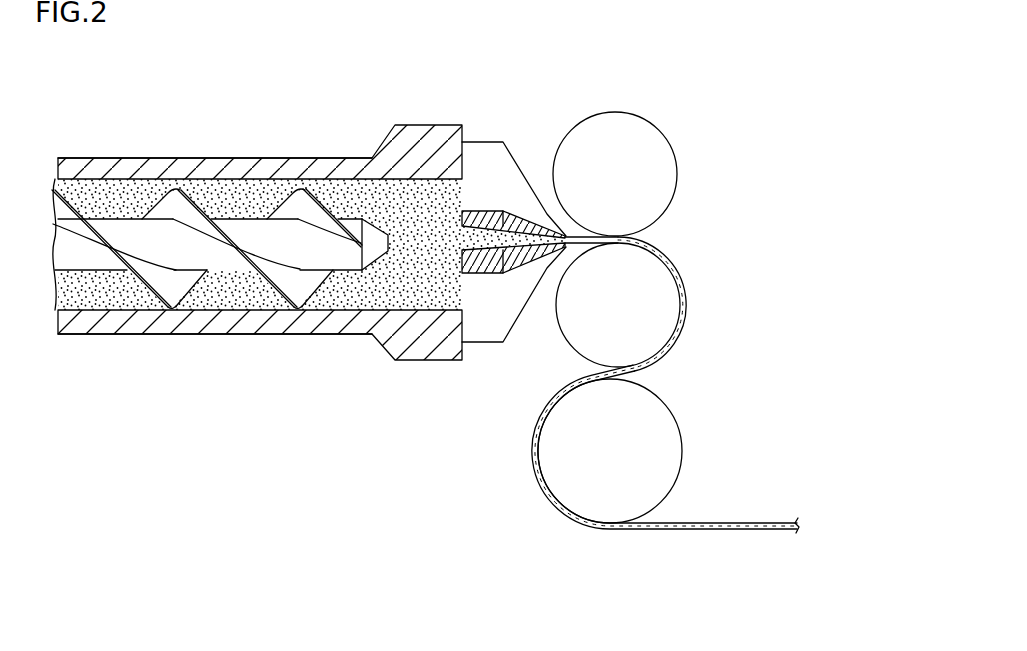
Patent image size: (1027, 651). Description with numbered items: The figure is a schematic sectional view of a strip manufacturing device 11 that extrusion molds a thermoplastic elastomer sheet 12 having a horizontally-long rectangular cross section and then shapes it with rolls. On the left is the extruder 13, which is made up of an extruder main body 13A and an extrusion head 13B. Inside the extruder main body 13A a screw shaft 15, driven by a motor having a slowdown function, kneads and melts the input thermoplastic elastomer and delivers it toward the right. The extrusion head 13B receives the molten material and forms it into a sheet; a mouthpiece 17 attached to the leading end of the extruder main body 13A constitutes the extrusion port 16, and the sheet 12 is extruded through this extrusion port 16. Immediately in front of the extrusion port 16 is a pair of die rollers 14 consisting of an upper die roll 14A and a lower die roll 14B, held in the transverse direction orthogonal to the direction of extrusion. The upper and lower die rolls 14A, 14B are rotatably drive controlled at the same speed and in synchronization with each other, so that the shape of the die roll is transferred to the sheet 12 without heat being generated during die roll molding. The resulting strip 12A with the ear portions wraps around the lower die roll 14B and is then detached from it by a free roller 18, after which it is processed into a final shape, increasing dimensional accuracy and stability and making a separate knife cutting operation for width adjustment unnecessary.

The strip manufacturing device 11 is at (445, 97).
The thermoplastic elastomer sheet 12 is at (574, 230).
The strip with ear portions 12A is at (682, 283).
The extruder 13 is at (347, 343).
The extruder main body 13A is at (177, 335).
The extrusion head 13B is at (487, 342).
The pair of die rollers 14 is at (633, 102).
The upper die roll 14A is at (667, 175).
The lower die roll 14B is at (658, 307).
The screw shaft 15 is at (103, 273).
The extrusion port 16 is at (568, 245).
The mouthpiece 17 is at (527, 216).
The free roller 18 is at (672, 453).